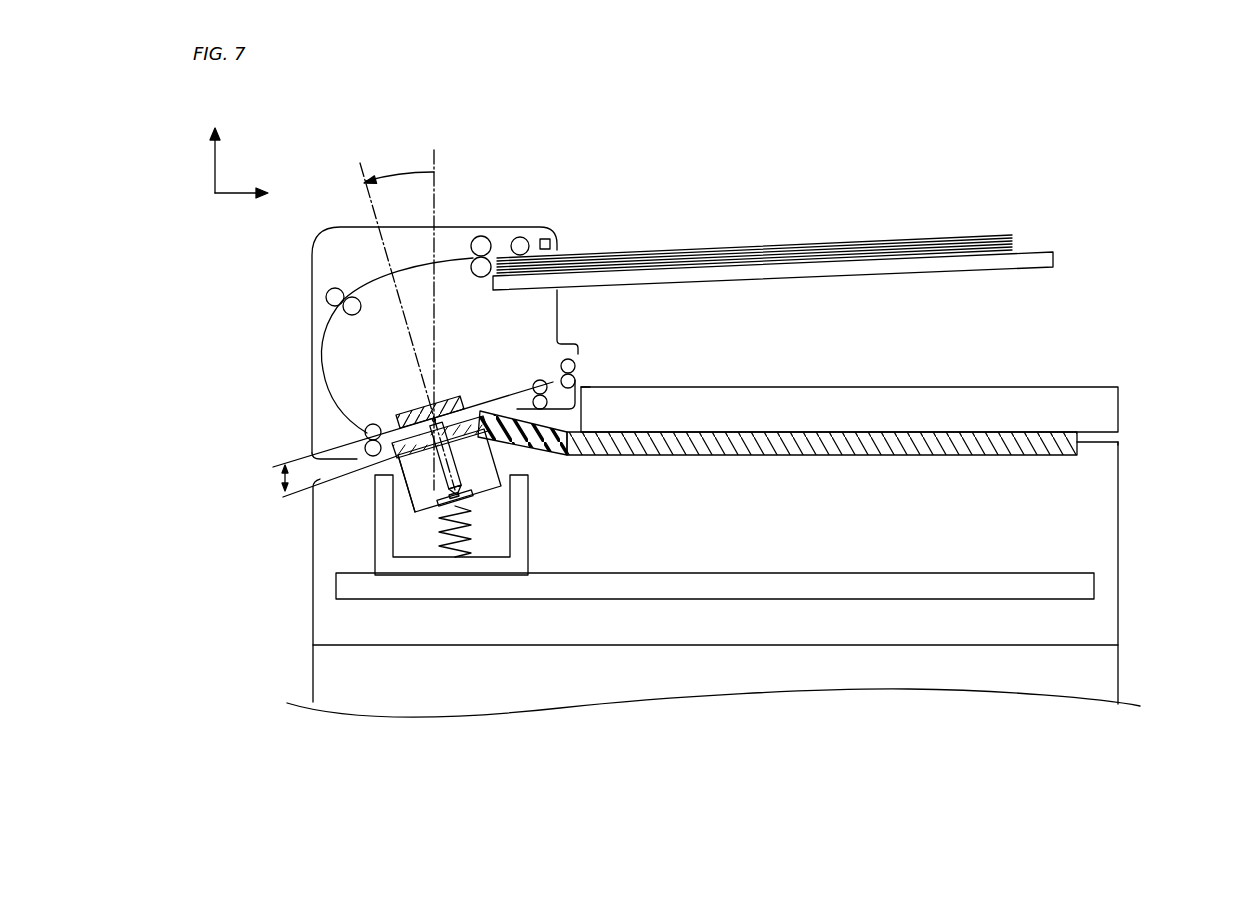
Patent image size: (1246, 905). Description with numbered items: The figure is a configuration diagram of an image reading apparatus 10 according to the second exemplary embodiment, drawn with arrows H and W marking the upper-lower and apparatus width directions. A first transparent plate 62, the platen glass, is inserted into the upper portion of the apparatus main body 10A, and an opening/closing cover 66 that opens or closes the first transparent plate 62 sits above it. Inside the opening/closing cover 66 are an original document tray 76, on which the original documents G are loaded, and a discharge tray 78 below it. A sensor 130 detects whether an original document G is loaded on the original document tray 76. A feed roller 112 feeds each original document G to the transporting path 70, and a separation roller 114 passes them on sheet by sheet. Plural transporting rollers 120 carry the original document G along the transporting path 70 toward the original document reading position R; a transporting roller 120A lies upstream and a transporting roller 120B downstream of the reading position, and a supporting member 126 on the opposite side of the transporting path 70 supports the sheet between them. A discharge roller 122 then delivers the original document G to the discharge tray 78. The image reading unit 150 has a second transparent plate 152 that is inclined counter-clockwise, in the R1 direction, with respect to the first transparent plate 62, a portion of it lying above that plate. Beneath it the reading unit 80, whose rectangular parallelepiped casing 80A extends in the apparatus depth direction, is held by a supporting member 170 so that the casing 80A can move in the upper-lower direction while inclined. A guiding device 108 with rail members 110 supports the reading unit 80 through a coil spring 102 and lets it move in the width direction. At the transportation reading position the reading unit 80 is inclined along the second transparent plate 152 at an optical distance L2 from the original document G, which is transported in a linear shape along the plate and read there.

The image reading apparatus 10 is at (1180, 193).
The apparatus main body 10A is at (1118, 543).
The first transparent plate 62 is at (853, 450).
The opening/closing cover 66 is at (299, 346).
The transporting path 70 is at (312, 386).
The original document tray 76 is at (1040, 270).
The discharge tray 78 is at (1100, 397).
The reading unit 80 is at (497, 465).
The casing 80A is at (410, 497).
The coil spring 102 is at (488, 533).
The guiding device 108 is at (713, 703).
The rail members 110 is at (883, 599).
The feed roller 112 is at (520, 237).
The separation roller 114 is at (481, 236).
The transporting rollers 120 is at (326, 297).
The transporting roller 120A is at (373, 424).
The transporting roller 120B is at (533, 380).
The discharge roller 122 is at (570, 352).
The supporting member 126 is at (411, 407).
The sensor 130 is at (549, 234).
The image reading unit 150 is at (1147, 337).
The second transparent plate 152 is at (477, 412).
The supporting member 170 is at (528, 533).
The original document G is at (855, 235).
The original document reading position R is at (444, 416).
The R1 direction R1 is at (407, 319).
The optical distance L2 is at (406, 440).
The height direction H is at (214, 151).
The width direction W is at (254, 191).